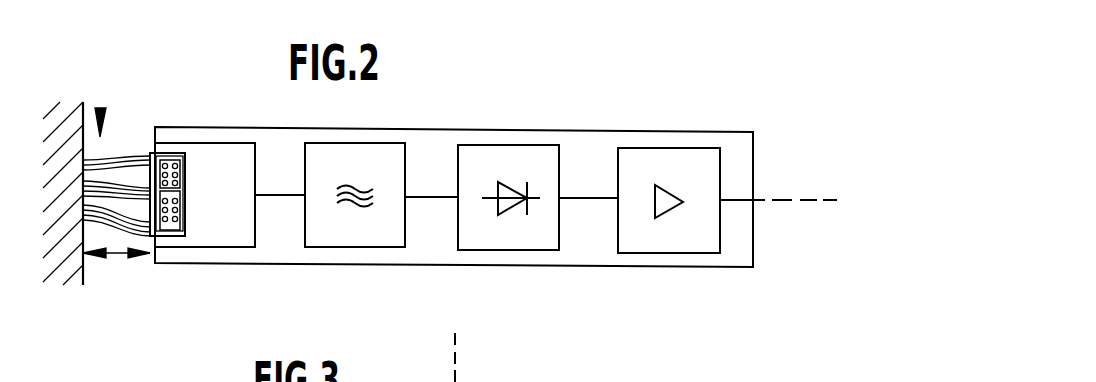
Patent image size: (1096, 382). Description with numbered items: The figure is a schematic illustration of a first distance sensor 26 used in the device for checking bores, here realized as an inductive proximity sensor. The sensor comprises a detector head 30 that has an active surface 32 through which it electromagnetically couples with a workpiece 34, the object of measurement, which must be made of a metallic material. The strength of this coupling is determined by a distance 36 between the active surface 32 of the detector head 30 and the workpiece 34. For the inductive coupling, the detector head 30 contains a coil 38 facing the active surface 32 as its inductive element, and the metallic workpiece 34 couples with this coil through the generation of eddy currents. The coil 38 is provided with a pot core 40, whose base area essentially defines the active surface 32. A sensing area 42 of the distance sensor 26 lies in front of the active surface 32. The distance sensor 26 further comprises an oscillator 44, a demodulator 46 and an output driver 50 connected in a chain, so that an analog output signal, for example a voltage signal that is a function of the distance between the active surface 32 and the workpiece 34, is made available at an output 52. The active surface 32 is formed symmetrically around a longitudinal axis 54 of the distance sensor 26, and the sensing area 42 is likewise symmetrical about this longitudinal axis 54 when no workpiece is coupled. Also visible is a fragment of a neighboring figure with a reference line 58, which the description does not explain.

In FIG. 2, the distance sensor 26 is at (478, 98).
In FIG. 2, the detector head 30 is at (155, 243).
In FIG. 2, the active surface 32 is at (150, 152).
In FIG. 2, the workpiece 34 is at (82, 283).
In FIG. 2, the distance 36 is at (118, 255).
In FIG. 2, the coil 38 is at (140, 212).
In FIG. 2, the pot core 40 is at (176, 160).
In FIG. 2, the sensing area 42 is at (100, 108).
In FIG. 2, the oscillator 44 is at (353, 230).
In FIG. 2, the demodulator 46 is at (522, 235).
In FIG. 2, the output driver 50 is at (640, 165).
In FIG. 2, the output 52 is at (755, 200).
In FIG. 2, the longitudinal axis 54 is at (810, 200).
In FIG. 3, the center line 58 is at (455, 372).